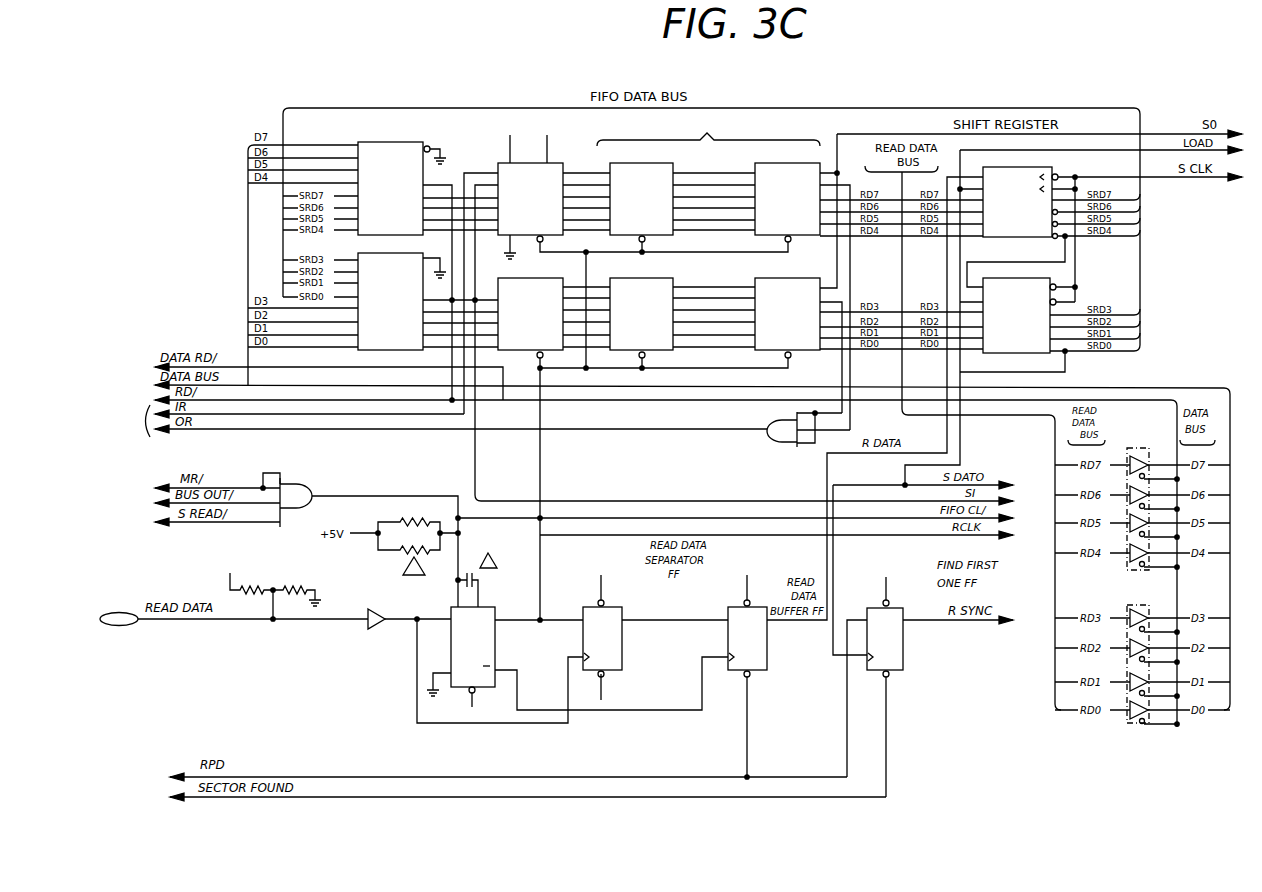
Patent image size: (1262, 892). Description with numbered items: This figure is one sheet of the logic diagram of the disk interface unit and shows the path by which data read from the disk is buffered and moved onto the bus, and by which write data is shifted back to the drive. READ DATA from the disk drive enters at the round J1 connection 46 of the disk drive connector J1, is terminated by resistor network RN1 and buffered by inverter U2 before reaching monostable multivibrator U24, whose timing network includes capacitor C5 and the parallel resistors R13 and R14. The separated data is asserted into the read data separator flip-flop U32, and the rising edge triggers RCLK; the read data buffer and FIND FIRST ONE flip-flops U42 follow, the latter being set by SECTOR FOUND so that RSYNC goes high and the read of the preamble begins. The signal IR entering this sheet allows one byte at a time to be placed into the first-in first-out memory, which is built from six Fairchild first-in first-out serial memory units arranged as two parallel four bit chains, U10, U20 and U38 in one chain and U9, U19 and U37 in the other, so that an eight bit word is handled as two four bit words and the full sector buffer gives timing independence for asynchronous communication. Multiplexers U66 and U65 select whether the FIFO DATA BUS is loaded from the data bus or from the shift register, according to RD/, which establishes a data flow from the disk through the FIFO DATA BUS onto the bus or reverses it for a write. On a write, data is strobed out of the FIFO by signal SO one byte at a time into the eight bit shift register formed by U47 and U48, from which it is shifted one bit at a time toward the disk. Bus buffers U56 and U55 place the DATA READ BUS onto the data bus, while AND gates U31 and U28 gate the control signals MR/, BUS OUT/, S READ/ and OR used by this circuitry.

The J1 connection 46 is at (119, 619).
The disk drive connector J1 is at (220, 621).
The 74LS157 multiplexer U66 is at (408, 129).
The 74LS157 multiplexer U65 is at (402, 295).
The 3341 first-in first-out memory U10 is at (524, 188).
The 3341 first-in first-out memory U20 is at (641, 202).
The 3341 first-in first-out memory U38 is at (787, 202).
The 3341 first-in first-out memory U9 is at (530, 318).
The 3341 first-in first-out memory U19 is at (641, 318).
The 3341 first-in first-out memory U37 is at (787, 318).
The 8-bit shift register U48 is at (1020, 195).
The 8-bit shift register U47 is at (1019, 315).
The 74LS125 bus buffer U56 is at (1140, 492).
The 74LS125 bus buffer U55 is at (1123, 652).
The 74LS21 AND gate U31 is at (305, 471).
The 74LS11 AND gate U28 is at (763, 422).
The 74LS14 inverter U2 is at (364, 605).
The 74LS221 monostable multivibrator U24 is at (497, 596).
The read data separator flip-flop U32 is at (595, 631).
The 74LS74 flip-flop U42 is at (816, 674).
The resistor R13 SAT R13 is at (408, 528).
The resistor R14 is at (400, 565).
The resistor network RN1 is at (266, 581).
The capacitor C5 is at (477, 577).